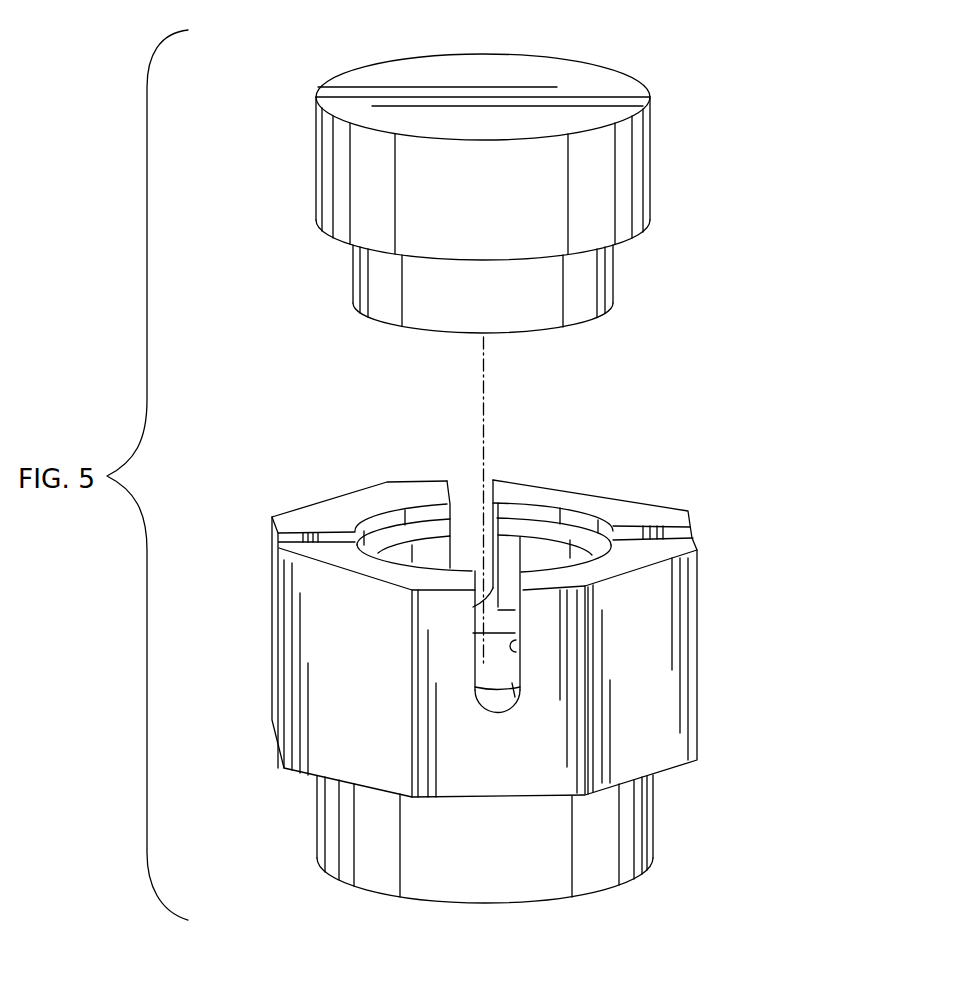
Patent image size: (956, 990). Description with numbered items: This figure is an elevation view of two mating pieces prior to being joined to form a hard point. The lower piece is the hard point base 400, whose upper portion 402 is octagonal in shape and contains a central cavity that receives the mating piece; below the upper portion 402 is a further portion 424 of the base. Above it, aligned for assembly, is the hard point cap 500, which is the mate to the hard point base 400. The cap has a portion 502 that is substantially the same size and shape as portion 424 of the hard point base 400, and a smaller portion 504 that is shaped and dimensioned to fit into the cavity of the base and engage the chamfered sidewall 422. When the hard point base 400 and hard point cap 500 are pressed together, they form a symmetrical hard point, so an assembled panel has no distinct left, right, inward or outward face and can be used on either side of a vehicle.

The hard point cap 500 is at (560, 173).
The portion of hard point cap 502 is at (638, 173).
The portion of hard point cap 504 is at (585, 277).
The hard point base 400 is at (561, 633).
The upper portion of hard point base 402 is at (662, 620).
The chamfered sidewall 422 is at (530, 527).
The portion of hard point base 424 is at (640, 825).